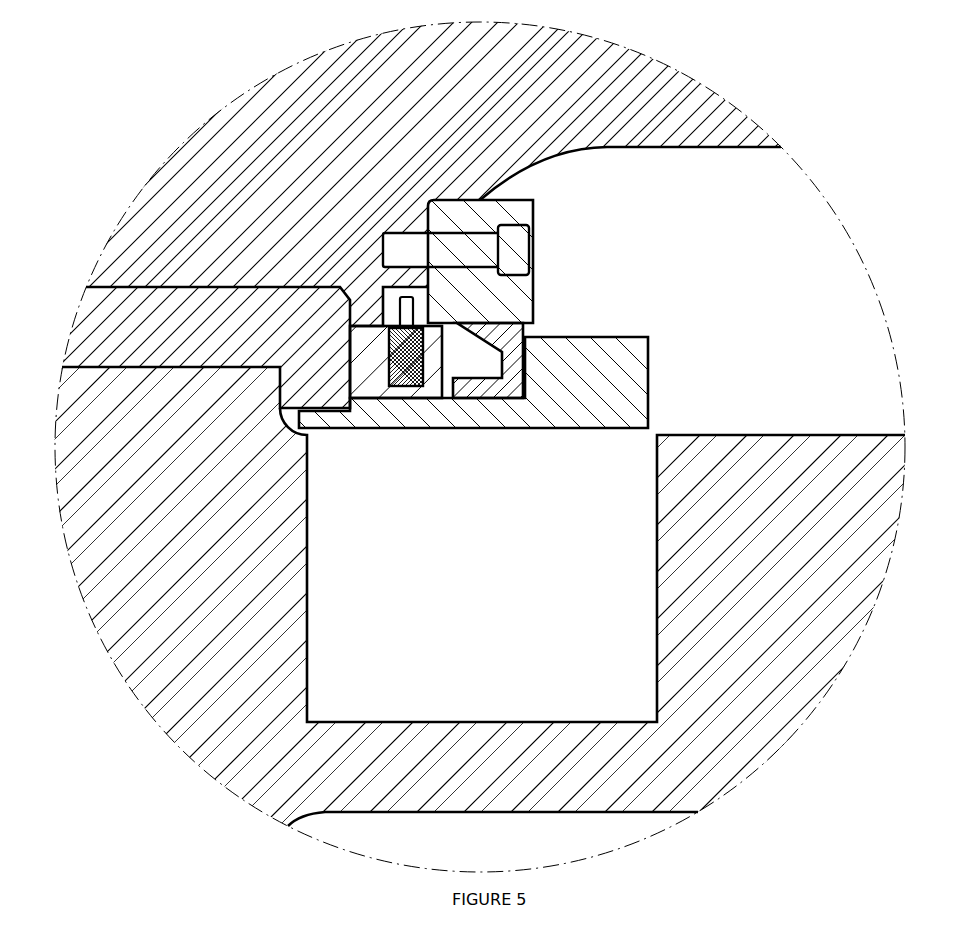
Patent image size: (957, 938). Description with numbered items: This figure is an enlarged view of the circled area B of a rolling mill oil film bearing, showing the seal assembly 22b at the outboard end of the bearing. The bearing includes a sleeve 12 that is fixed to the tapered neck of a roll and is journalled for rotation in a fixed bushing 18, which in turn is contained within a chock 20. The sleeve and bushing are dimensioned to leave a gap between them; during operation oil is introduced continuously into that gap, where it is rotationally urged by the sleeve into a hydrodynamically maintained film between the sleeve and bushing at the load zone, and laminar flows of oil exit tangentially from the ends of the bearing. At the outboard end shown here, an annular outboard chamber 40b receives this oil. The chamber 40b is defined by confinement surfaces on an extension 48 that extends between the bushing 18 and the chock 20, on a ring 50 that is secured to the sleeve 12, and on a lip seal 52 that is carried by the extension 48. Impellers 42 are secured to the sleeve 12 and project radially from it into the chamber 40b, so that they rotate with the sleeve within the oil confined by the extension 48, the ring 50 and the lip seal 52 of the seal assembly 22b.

The sleeve 12 is at (293, 80).
The bushing 18 is at (80, 339).
The chock 20 is at (92, 611).
The seal assembly 22b is at (789, 237).
The ring 50 is at (536, 204).
The impellers 42 is at (381, 399).
The extension 48 is at (466, 428).
The lip seal 52 is at (522, 399).
The outboard chamber 40b is at (485, 372).
The circled area B is at (902, 531).